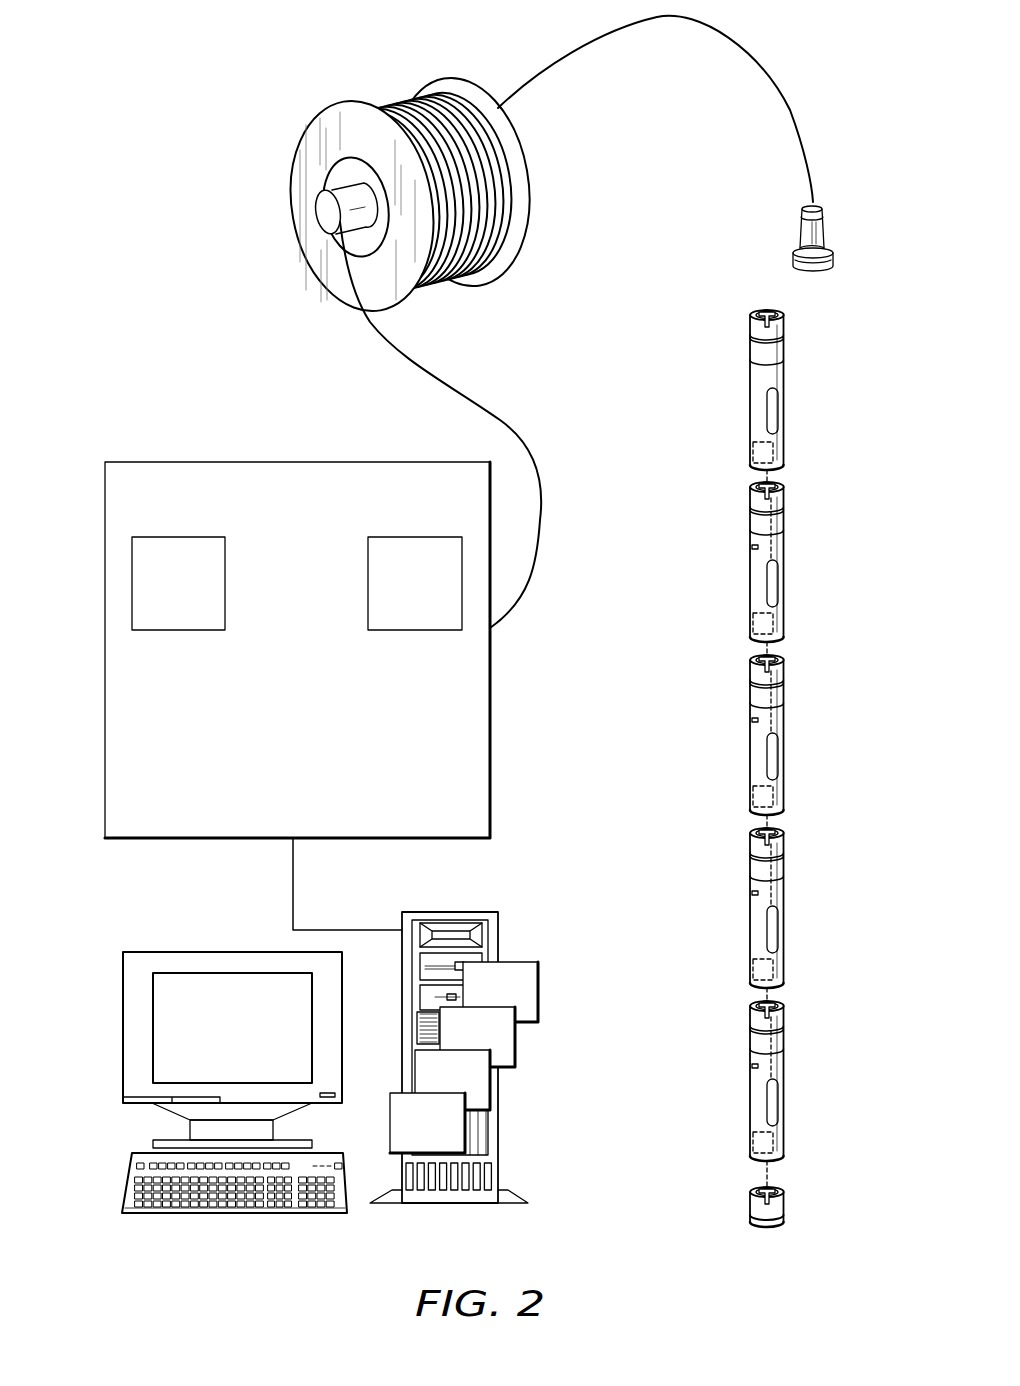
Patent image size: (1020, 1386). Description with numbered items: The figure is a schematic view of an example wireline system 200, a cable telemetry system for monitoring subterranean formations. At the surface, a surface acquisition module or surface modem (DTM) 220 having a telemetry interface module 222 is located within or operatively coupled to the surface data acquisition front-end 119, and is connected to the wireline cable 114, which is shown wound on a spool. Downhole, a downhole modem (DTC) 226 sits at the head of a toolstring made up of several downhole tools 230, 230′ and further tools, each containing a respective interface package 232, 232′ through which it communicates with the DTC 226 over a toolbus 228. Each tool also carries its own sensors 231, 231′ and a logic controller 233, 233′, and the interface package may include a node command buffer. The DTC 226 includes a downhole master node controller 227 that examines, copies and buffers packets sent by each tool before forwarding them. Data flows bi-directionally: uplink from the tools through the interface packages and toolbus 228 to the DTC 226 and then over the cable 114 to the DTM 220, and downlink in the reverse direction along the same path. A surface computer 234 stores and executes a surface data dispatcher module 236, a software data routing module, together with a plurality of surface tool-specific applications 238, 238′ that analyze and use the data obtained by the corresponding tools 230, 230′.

The wireline system 200 is at (152, 82).
The wireline cable 114 is at (518, 93).
The surface data acquisition front-end 119 is at (168, 505).
The surface acquisition module/surface modem (DTM) 220 is at (199, 595).
The telemetry interface module 222 is at (436, 595).
The downhole modem (DTC) 226 is at (785, 377).
The downhole master node controller 227 is at (765, 452).
The toolbus 228 is at (775, 477).
The downhole tool 230 is at (785, 552).
The sensor 231 is at (752, 547).
The interface package 232 is at (773, 585).
The logic controller 233 is at (775, 625).
The downhole tool 230′ is at (776, 741).
The sensor 231′ is at (719, 702).
The interface package 232′ is at (818, 751).
The logic controller 233′ is at (810, 782).
The surface computer 234 is at (192, 952).
The surface data dispatcher module 236 is at (500, 925).
The surface tool-specific application 238 is at (448, 1133).
The surface tool-specific application 238′ is at (475, 1089).